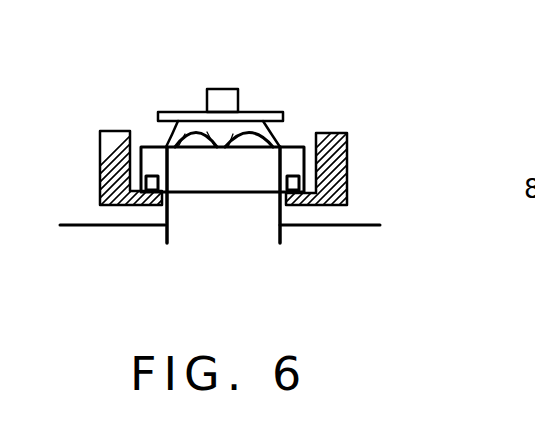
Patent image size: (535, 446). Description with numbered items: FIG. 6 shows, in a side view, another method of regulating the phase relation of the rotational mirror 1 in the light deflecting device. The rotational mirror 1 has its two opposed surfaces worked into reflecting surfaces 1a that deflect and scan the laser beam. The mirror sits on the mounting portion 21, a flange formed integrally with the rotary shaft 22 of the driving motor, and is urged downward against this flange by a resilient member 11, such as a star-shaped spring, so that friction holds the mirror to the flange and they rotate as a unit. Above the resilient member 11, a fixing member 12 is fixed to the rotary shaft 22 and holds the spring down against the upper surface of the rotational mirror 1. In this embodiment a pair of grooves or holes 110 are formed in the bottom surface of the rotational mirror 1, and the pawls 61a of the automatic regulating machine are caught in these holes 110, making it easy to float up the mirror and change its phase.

The rotational mirror 1 is at (152, 145).
The reflecting surfaces 1a is at (182, 163).
The resilient member 11 is at (272, 140).
The grooves or holes 110 is at (291, 176).
The fixing member 12 is at (187, 111).
The mounting portion 21 is at (227, 226).
The rotary shaft 22 is at (227, 89).
The pawls 61a is at (347, 167).